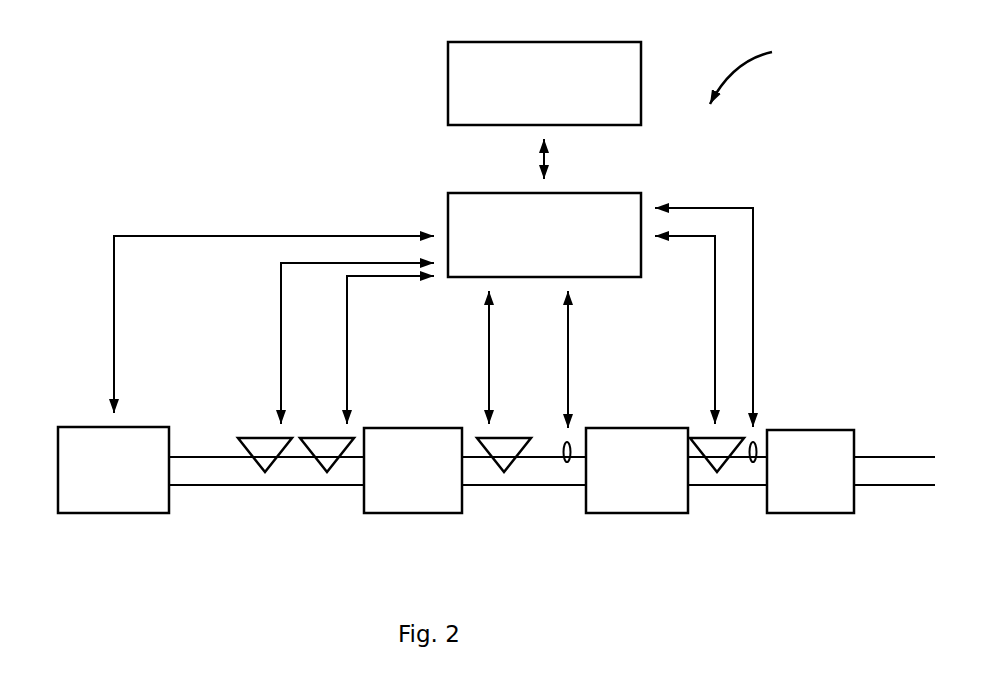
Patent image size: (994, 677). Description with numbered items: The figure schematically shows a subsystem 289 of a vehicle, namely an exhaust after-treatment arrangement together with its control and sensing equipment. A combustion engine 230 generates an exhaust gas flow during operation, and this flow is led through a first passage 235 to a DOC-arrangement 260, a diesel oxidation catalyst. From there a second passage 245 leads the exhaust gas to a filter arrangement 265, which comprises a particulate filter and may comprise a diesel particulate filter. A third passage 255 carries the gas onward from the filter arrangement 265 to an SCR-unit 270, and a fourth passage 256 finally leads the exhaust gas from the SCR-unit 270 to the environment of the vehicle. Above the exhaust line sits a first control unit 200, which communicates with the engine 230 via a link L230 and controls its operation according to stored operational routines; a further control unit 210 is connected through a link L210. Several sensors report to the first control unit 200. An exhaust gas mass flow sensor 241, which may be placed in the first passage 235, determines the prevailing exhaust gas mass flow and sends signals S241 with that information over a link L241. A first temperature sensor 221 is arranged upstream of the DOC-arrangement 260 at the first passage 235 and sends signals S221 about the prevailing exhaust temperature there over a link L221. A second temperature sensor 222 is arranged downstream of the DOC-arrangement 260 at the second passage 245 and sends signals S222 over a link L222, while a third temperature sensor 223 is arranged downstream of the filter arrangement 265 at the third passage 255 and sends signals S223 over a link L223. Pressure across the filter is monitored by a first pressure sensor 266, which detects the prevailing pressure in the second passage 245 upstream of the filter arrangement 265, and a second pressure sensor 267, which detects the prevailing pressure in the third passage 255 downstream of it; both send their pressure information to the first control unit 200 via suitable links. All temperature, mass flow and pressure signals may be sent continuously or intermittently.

The control unit 210 is at (544, 83).
The first control unit 200 is at (544, 235).
The subsystem 289 is at (772, 71).
The link L210 is at (544, 158).
The link L230 is at (114, 308).
The link L221 is at (281, 334).
The link L241 is at (347, 313).
The signals S221 is at (246, 357).
The signals S241 is at (401, 359).
The first temperature sensor 221 is at (238, 438).
The exhaust gas mass flow sensor 241 is at (328, 438).
The engine 230 is at (113, 470).
The DOC-arrangement 260 is at (413, 470).
The link L222 is at (491, 312).
The signals S222 is at (533, 359).
The second temperature sensor 222 is at (517, 440).
The first pressure sensor 266 is at (567, 442).
The link L223 is at (715, 318).
The signals S223 is at (672, 352).
The third temperature sensor 223 is at (702, 440).
The second pressure sensor 267 is at (756, 438).
The filter arrangement 265 is at (637, 470).
The SCR-unit 270 is at (810, 471).
The first passage 235 is at (242, 486).
The second passage 245 is at (543, 486).
The third passage 255 is at (707, 486).
The fourth passage 256 is at (882, 486).